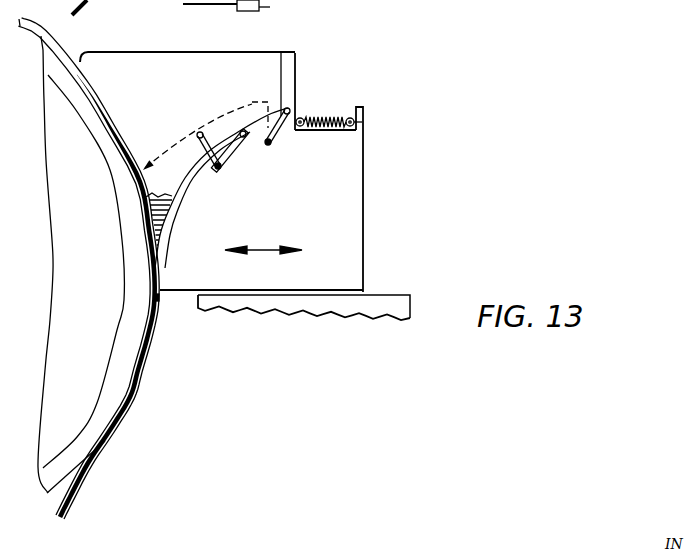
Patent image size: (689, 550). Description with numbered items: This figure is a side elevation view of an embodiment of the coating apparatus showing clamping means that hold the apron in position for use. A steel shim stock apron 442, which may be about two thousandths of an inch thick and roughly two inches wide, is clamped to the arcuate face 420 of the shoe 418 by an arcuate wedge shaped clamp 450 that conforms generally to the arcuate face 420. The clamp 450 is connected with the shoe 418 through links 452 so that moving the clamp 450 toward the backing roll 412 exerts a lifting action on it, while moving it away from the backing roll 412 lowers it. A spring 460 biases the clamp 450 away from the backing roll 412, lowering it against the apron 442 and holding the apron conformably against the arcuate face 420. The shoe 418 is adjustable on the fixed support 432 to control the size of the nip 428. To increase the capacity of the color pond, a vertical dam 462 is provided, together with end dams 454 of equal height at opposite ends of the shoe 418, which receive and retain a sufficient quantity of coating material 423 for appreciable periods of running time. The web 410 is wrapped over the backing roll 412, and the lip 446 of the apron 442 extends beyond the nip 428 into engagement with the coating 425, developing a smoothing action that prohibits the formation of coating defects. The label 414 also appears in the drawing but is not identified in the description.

The web 410 is at (46, 33).
The backing roll 412 is at (65, 123).
The web layer 414 is at (95, 120).
The shoe 418 is at (342, 222).
The arcuate face 420 is at (200, 181).
The coating material 423 is at (147, 198).
The coating 425 is at (106, 445).
The nip 428 is at (150, 233).
The fixed support 432 is at (373, 307).
The steel shim stock apron 442 is at (182, 183).
The lip 446 is at (158, 301).
The arcuate wedge shaped clamp 450 is at (208, 118).
The links 452 is at (200, 135).
The end dams 454 is at (175, 68).
The spring 460 is at (328, 113).
The vertical dam 462 is at (295, 80).